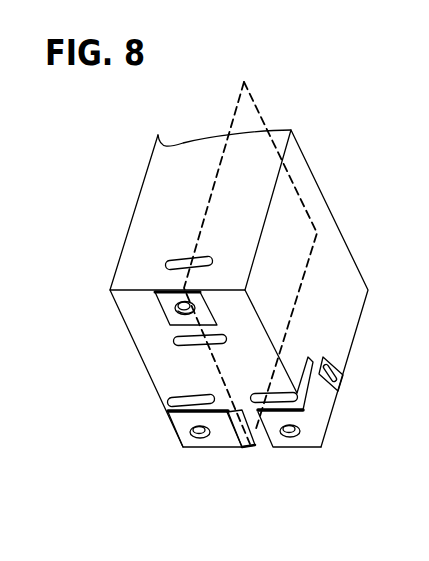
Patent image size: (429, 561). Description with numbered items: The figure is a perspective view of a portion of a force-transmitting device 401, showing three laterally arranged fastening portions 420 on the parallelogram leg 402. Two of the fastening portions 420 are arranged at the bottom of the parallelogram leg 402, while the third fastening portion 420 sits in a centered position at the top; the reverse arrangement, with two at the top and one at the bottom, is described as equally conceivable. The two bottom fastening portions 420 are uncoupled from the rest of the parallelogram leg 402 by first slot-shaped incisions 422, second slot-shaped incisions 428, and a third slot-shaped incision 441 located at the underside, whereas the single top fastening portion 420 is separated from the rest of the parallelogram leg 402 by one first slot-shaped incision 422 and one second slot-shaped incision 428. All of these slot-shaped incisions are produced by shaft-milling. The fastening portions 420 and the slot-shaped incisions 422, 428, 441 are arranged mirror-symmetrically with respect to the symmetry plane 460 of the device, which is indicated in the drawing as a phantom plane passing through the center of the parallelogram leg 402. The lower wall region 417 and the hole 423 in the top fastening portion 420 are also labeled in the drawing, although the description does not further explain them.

The force-transmitting device 401 is at (298, 130).
The parallelogram leg 402 is at (344, 310).
The lower wall portion 417 is at (172, 372).
The fastening portion 420 is at (158, 306).
The first slot-shaped incision 422 is at (170, 262).
The mounting hole 423 is at (181, 318).
The second slot-shaped incision 428 is at (175, 343).
The third slot-shaped incision 441 is at (231, 446).
The symmetry plane 460 is at (248, 120).